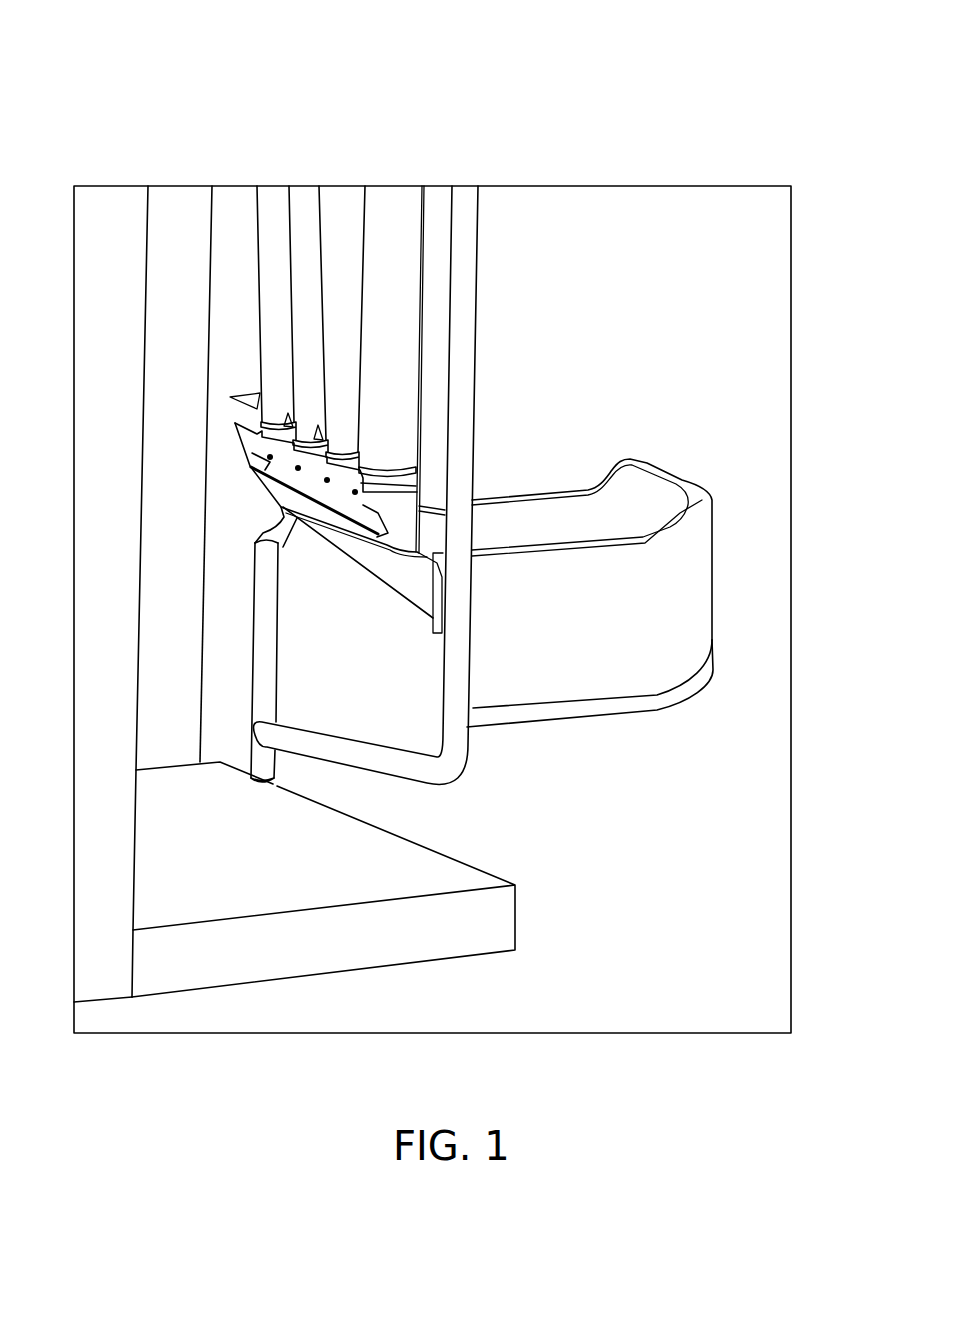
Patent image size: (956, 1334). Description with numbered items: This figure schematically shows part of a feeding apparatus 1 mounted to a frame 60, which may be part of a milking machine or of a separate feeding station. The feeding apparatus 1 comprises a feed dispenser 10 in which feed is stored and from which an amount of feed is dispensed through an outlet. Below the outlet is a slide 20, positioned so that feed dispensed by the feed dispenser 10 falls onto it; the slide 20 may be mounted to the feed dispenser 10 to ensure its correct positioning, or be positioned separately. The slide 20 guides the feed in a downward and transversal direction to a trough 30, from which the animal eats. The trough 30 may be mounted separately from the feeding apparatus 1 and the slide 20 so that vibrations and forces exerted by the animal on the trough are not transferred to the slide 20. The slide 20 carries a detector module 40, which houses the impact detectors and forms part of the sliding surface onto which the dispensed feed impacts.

The feeding apparatus 1 is at (246, 170).
The feed dispenser 10 is at (269, 238).
The slide 20 is at (395, 512).
The trough 30 is at (578, 602).
The detector module 40 is at (310, 502).
The frame 60 is at (87, 892).